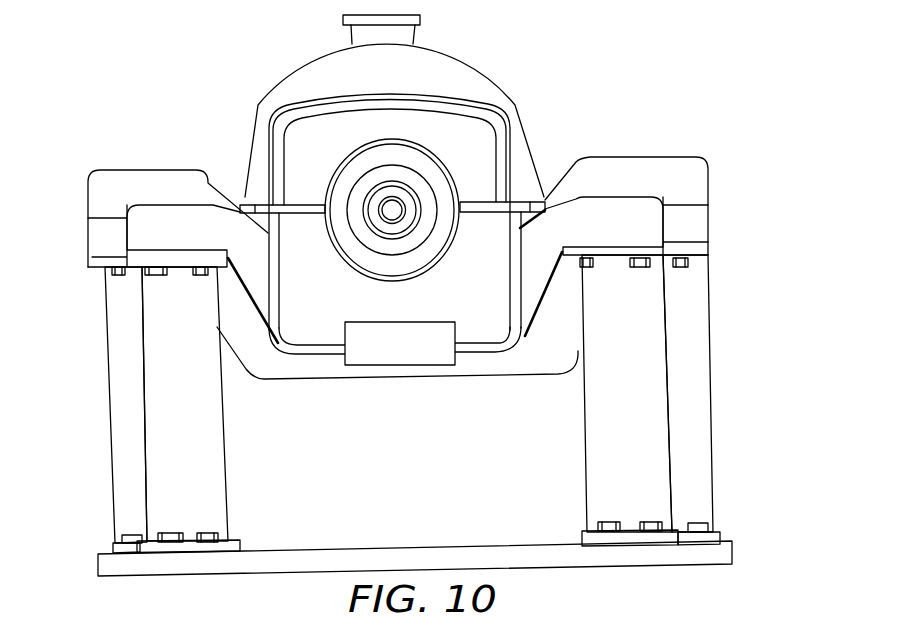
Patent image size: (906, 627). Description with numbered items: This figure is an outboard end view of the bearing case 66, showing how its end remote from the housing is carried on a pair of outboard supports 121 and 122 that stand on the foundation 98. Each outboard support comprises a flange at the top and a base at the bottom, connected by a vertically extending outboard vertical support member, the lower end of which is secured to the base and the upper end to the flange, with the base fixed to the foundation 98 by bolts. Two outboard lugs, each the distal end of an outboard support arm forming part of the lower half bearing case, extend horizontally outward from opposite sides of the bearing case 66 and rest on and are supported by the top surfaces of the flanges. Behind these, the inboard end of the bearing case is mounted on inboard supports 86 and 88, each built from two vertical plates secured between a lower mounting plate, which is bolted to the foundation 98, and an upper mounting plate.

The bearing case 66 is at (483, 58).
The inboard support 86 is at (75, 402).
The inboard support 88 is at (730, 380).
The foundation 98 is at (383, 546).
The outboard support 121 is at (220, 404).
The outboard support 122 is at (588, 393).